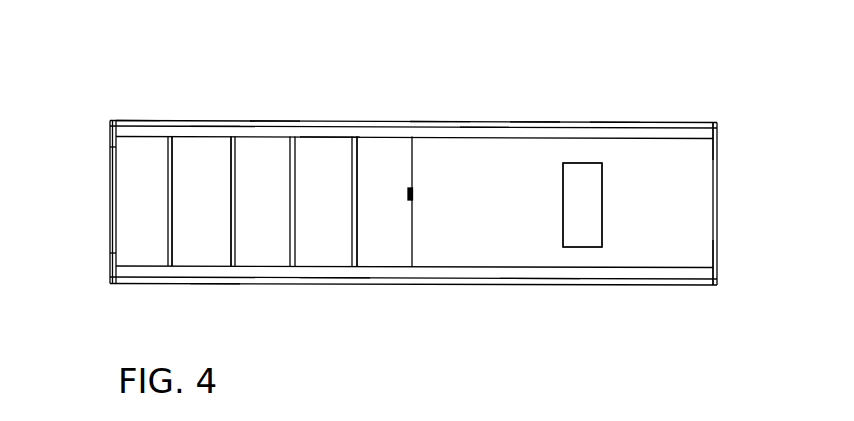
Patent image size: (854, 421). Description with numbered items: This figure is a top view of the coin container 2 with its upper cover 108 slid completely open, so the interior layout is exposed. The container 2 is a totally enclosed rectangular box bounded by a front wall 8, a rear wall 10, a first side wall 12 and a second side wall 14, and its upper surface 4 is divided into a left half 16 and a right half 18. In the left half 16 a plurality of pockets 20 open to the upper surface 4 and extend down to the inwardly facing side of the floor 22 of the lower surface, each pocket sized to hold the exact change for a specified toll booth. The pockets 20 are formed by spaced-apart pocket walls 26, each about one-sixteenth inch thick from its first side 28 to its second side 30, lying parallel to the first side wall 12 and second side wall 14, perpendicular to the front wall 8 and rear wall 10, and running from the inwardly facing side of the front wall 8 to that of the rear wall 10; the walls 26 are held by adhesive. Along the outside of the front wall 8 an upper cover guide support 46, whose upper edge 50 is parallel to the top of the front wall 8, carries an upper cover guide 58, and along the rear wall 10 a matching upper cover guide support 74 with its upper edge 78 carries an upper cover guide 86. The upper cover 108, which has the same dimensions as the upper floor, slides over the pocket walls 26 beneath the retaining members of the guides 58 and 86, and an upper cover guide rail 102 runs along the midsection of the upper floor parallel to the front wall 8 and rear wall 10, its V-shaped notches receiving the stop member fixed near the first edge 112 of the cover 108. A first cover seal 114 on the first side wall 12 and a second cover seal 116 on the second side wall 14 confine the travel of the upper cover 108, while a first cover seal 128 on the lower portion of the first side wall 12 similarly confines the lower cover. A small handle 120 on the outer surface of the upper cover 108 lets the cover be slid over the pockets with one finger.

The container 2 is at (442, 108).
The upper surface 4 is at (483, 134).
The front wall 8 is at (213, 290).
The rear wall 10 is at (535, 108).
The first side wall 12 is at (96, 227).
The second side wall 14 is at (723, 237).
The left half 16 is at (272, 112).
The right half 18 is at (617, 117).
The pockets 20 is at (190, 252).
The floor 22 is at (200, 212).
The pocket walls 26 is at (287, 245).
The first side 28 is at (351, 168).
The second side 30 is at (380, 178).
The upper cover guide support 46 is at (425, 285).
The upper edge 50 is at (537, 282).
The upper cover guide 58 is at (333, 274).
The upper cover guide support 74 is at (140, 119).
The upper edge 78 is at (216, 125).
The upper cover guide 86 is at (328, 134).
The upper cover guide rail 102 is at (413, 193).
The upper cover 108 is at (616, 176).
The first edge 112 is at (712, 252).
The first cover seal 114 is at (109, 190).
The second cover seal 116 is at (720, 152).
The handle 120 is at (595, 210).
The first cover seal 128 is at (109, 138).